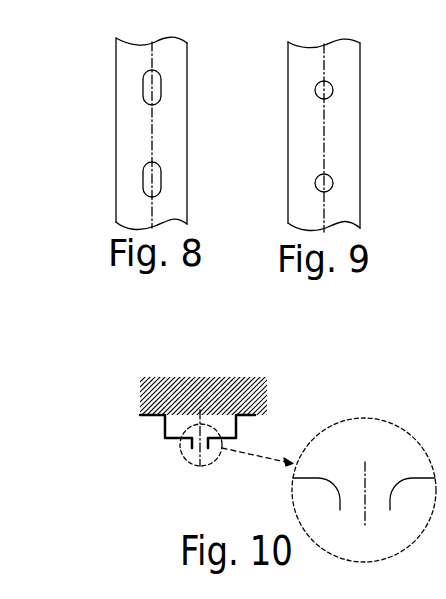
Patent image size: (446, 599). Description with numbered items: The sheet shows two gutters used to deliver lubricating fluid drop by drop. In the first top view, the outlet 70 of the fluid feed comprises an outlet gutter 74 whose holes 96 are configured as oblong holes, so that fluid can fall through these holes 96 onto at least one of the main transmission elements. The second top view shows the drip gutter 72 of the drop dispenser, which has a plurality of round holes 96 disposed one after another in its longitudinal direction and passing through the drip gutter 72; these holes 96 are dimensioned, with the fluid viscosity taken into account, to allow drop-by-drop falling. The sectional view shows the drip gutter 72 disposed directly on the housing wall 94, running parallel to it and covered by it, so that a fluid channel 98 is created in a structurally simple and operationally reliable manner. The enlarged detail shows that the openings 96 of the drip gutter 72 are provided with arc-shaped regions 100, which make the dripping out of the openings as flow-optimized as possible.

In FIG. 8, the outlet 70 is at (111, 90).
In FIG. 9, the drip gutter 72 is at (344, 135).
In FIG. 10, the drip gutter 72 is at (255, 415).
In FIG. 8, the outlet gutter 74 is at (170, 145).
In FIG. 10, the housing wall 94 is at (222, 398).
In FIG. 8, the holes 96 is at (161, 89).
In FIG. 9, the holes 96 is at (333, 90).
In FIG. 10, the holes 96 is at (193, 452).
In FIG. 10, the fluid channel 98 is at (180, 418).
In FIG. 10, the arc-shaped regions 100 is at (398, 478).